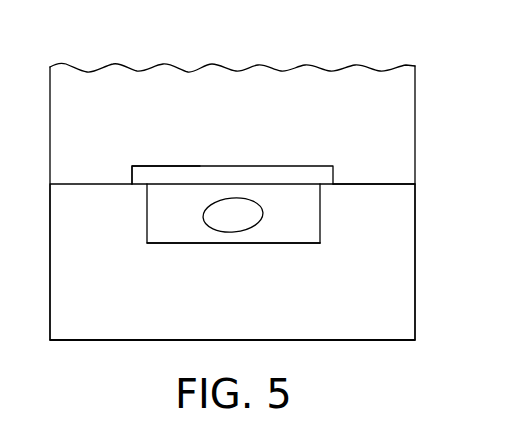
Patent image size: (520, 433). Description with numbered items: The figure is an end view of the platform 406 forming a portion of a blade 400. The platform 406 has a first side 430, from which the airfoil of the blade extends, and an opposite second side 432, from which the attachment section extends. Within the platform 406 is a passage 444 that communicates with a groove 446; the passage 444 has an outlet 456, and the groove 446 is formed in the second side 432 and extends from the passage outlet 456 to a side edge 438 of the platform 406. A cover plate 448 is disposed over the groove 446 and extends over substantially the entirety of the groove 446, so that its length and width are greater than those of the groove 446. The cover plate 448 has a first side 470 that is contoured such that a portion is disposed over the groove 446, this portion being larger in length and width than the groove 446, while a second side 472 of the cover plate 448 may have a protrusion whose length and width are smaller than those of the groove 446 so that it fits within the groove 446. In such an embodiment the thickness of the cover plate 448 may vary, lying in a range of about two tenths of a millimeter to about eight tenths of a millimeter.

The blade 400 is at (403, 103).
The platform 406 is at (415, 257).
The first side 430 is at (102, 340).
The second side 432 is at (377, 183).
The side edge 438 is at (272, 324).
The passage 444 is at (217, 212).
The groove 446 is at (158, 237).
The cover plate 448 is at (157, 173).
The outlet 456 is at (260, 227).
The first side 470 is at (240, 165).
The second side 472 is at (300, 187).